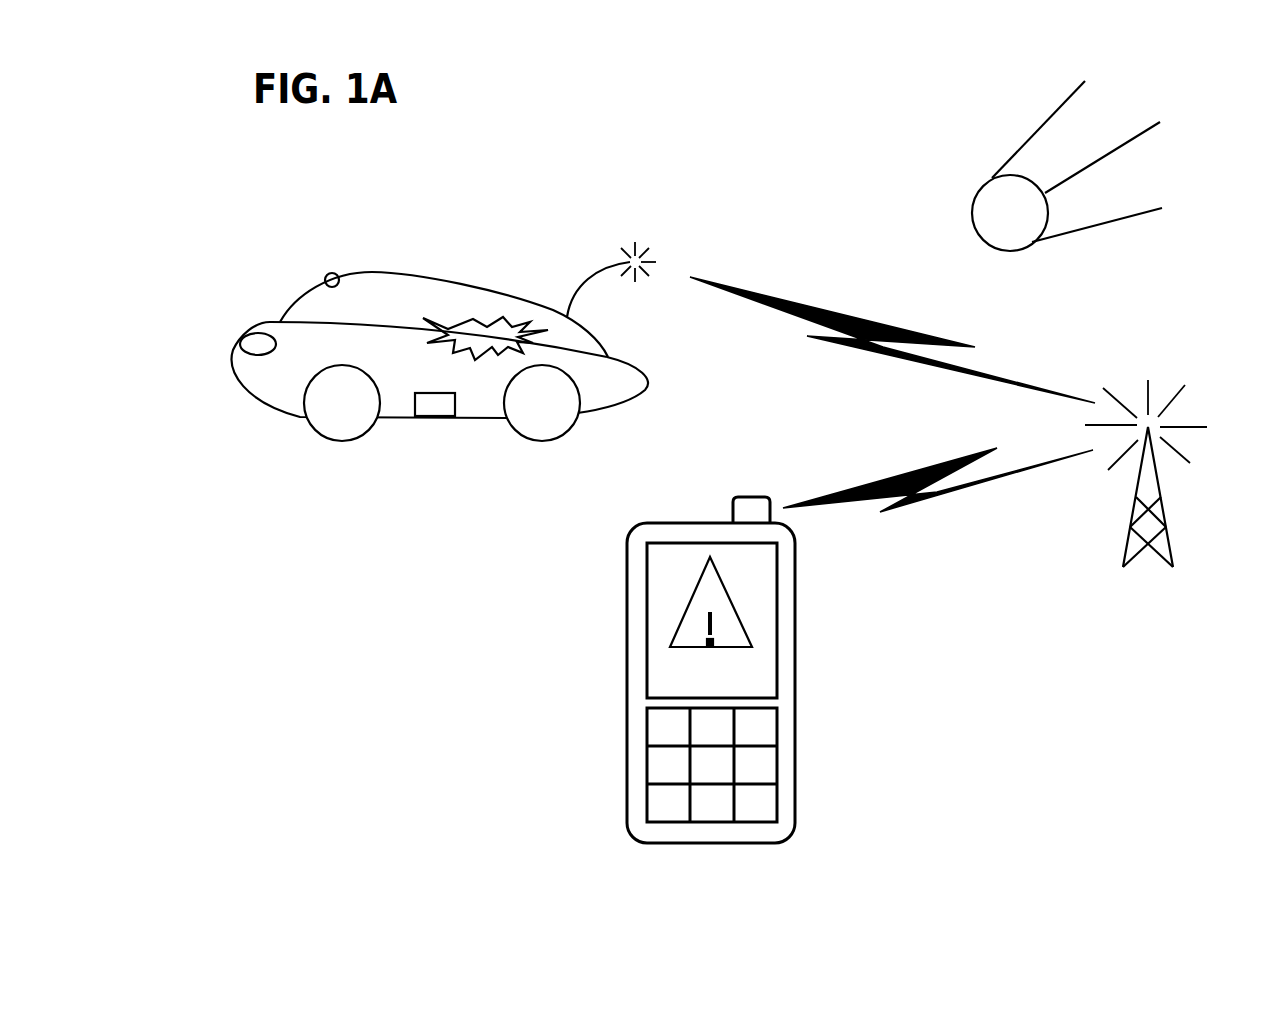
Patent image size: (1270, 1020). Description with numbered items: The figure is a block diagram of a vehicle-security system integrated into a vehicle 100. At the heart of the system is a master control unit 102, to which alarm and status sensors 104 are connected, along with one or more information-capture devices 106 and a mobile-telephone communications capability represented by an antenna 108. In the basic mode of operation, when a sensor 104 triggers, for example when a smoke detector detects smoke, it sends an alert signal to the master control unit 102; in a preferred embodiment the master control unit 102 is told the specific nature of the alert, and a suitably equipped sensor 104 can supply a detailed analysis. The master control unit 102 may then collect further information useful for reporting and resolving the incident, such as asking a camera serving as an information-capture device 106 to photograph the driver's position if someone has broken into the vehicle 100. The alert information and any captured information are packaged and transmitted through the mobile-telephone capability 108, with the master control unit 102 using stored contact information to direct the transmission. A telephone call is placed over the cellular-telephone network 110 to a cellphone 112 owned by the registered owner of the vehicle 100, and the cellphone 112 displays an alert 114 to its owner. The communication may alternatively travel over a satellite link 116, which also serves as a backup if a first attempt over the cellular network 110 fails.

The vehicle 100 is at (228, 346).
The master control unit 102 is at (428, 412).
The alarm and status sensors 104 is at (497, 330).
The information-capture devices 106 is at (325, 273).
The antenna 108 is at (620, 262).
The cellular-telephone network 110 is at (1176, 528).
The cellphone 112 is at (723, 670).
The alert 114 is at (750, 593).
The satellite link 116 is at (988, 228).